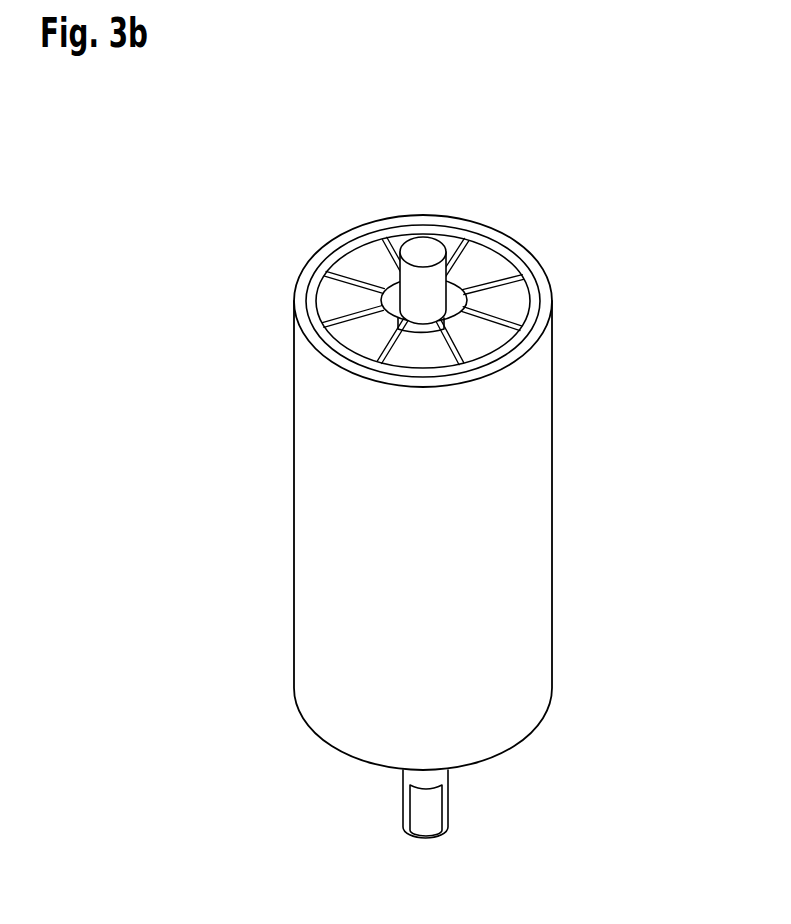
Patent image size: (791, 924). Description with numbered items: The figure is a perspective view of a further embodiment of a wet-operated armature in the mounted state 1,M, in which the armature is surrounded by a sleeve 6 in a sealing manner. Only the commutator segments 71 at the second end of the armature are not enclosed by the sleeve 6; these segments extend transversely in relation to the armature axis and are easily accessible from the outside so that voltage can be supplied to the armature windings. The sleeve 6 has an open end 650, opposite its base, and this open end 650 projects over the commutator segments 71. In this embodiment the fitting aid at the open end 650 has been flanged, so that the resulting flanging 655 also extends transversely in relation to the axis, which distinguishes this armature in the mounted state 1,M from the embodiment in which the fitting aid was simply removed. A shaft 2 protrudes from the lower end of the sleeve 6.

The armature in the mounted state 1,M is at (232, 233).
The motor shaft 2 is at (422, 805).
The sleeve 6 is at (338, 520).
The open end 650 is at (357, 221).
The flanging 655 is at (550, 340).
The commutator segments 71 is at (500, 303).